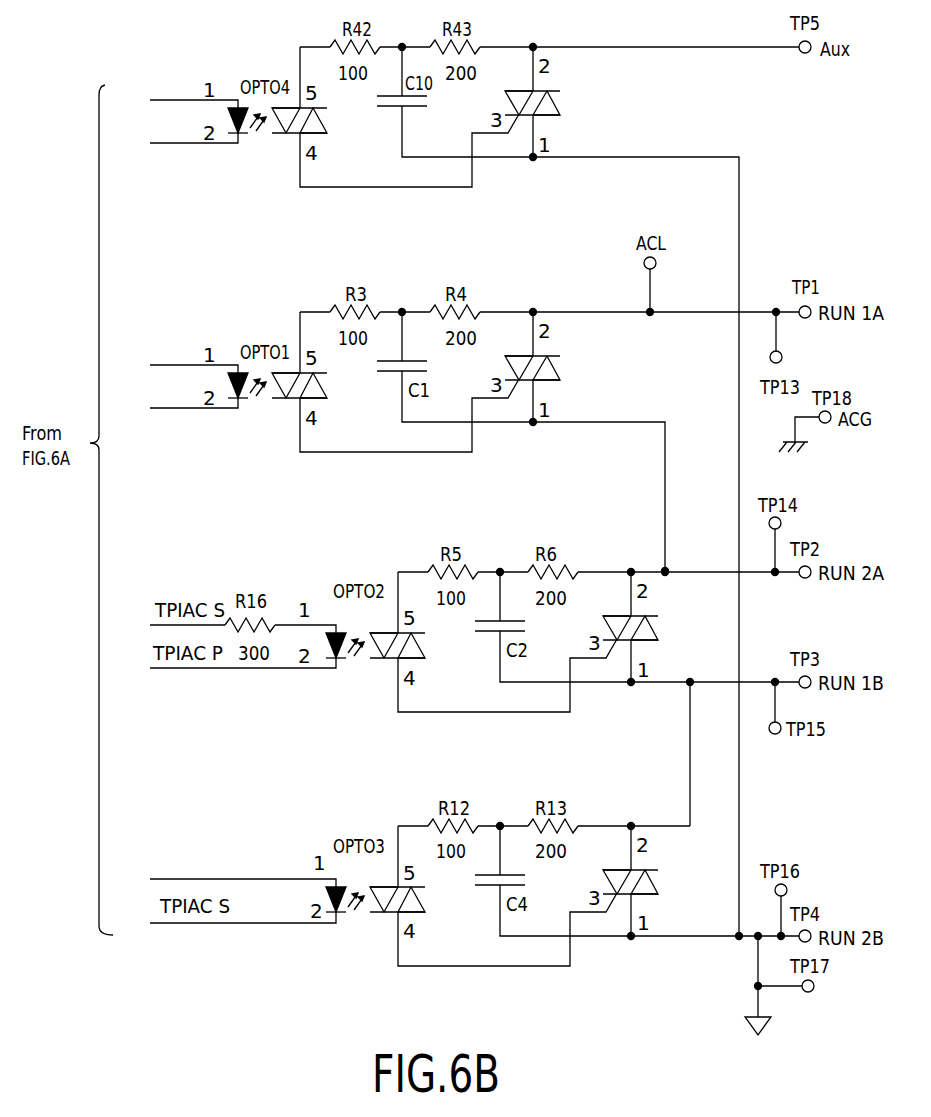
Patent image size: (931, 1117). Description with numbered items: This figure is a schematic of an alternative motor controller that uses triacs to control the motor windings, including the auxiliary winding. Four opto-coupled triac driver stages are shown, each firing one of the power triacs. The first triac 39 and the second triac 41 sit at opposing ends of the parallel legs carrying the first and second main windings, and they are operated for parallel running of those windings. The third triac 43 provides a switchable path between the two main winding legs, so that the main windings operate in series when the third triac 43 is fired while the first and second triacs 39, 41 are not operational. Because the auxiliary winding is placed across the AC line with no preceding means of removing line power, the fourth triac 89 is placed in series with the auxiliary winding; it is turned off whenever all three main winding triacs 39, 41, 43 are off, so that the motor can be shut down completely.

The fourth triac 89 is at (560, 101).
The first triac 39 is at (557, 357).
The third triac 43 is at (657, 636).
The second triac 41 is at (658, 889).